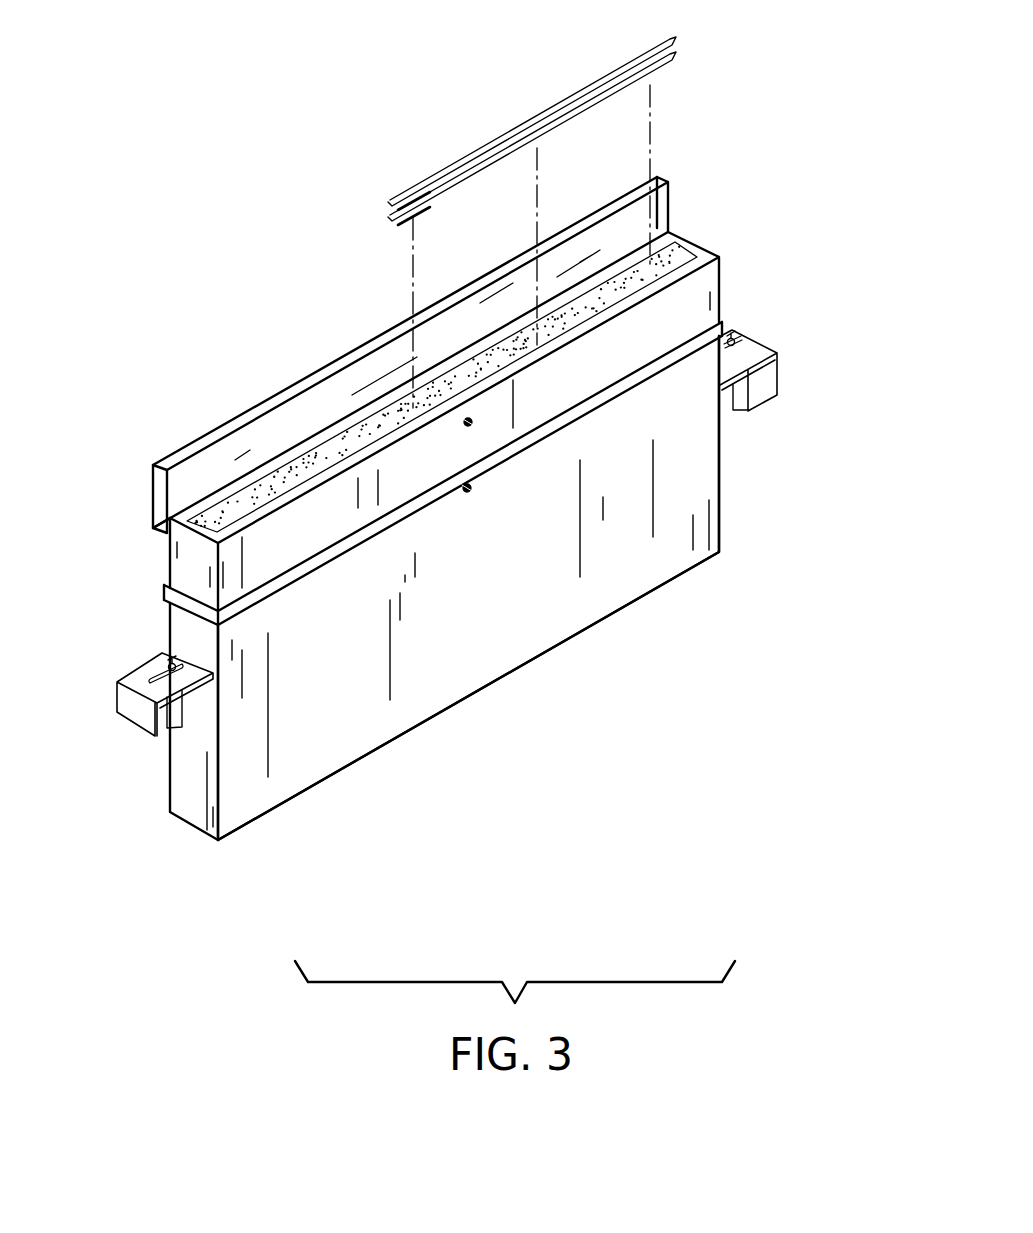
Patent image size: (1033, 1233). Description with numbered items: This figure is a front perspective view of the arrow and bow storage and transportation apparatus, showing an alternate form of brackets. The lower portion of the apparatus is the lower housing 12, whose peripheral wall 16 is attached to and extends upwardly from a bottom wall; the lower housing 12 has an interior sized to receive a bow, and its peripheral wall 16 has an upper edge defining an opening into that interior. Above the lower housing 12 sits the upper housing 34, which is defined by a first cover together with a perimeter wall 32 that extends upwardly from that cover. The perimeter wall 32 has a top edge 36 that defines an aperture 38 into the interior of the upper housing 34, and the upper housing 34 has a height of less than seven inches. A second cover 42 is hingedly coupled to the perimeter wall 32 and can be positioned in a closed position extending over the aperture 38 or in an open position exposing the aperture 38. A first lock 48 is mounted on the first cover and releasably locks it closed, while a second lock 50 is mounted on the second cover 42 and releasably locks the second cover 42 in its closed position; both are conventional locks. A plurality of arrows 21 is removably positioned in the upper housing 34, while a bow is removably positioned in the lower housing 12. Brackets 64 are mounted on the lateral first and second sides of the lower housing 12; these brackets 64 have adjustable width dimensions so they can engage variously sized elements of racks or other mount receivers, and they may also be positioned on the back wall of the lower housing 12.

The lower housing 12 is at (719, 552).
The peripheral wall 16 is at (719, 480).
The arrows 21 is at (536, 116).
The perimeter wall 32 is at (721, 312).
The upper housing 34 is at (708, 284).
The top edge 36 is at (687, 238).
The aperture 38 is at (218, 508).
The second cover 42 is at (195, 465).
The first lock 48 is at (469, 492).
The second lock 50 is at (472, 421).
The brackets 64 is at (128, 706).